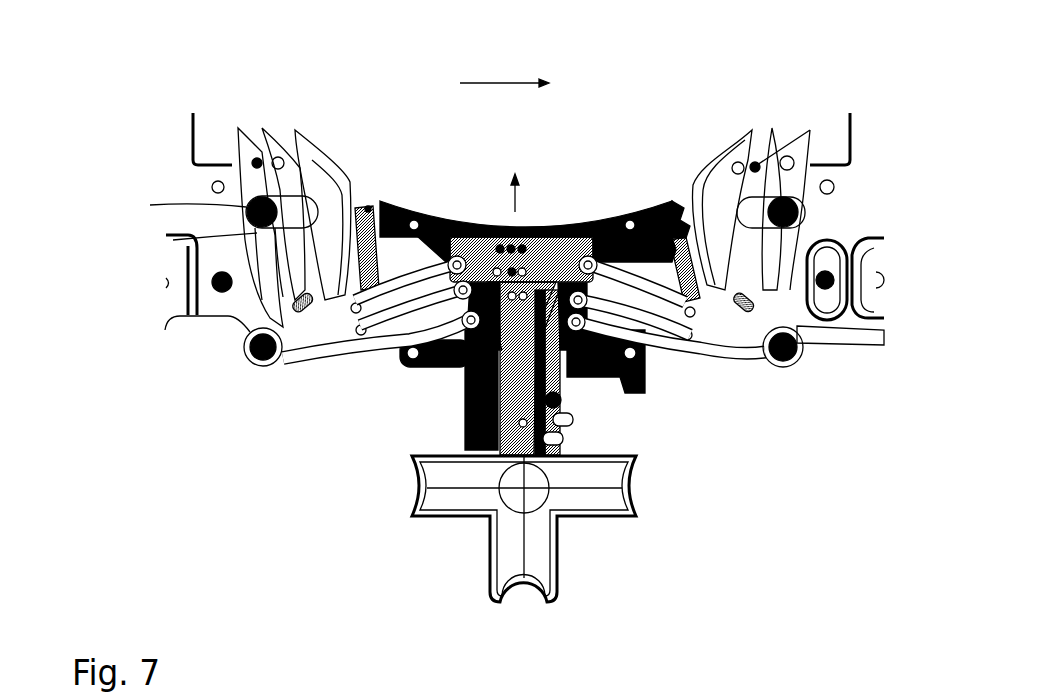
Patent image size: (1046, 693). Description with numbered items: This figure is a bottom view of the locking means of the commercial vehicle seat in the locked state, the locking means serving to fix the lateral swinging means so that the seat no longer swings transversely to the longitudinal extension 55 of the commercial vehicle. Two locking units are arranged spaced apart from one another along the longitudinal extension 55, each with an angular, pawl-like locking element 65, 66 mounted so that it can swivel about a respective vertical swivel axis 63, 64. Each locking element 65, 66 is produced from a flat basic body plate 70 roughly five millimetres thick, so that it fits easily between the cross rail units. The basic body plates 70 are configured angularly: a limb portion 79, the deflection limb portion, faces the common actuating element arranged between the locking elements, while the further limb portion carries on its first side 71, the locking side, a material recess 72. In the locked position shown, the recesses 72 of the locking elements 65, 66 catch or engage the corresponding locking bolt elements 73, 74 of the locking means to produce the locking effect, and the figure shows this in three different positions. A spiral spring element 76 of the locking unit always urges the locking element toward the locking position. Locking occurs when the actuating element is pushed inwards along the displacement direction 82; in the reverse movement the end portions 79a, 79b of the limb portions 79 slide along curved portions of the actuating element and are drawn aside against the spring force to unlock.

The longitudinal extension of the commercial vehicle 55 is at (496, 83).
The vertical swivel axis 63 is at (792, 362).
The vertical swivel axis 64 is at (257, 362).
The locking element 65 is at (540, 247).
The locking element 66 is at (360, 348).
The basic body plate 70 is at (753, 168).
The first side 71 is at (170, 243).
The material recess 72 is at (305, 160).
The locking bolt element 73 is at (246, 208).
The locking bolt element 74 is at (832, 180).
The spiral spring element 76 is at (658, 203).
The limb portion 79 is at (445, 368).
The end portion 79a is at (470, 235).
The end portion 79b is at (584, 258).
The displacement direction 82 is at (520, 192).